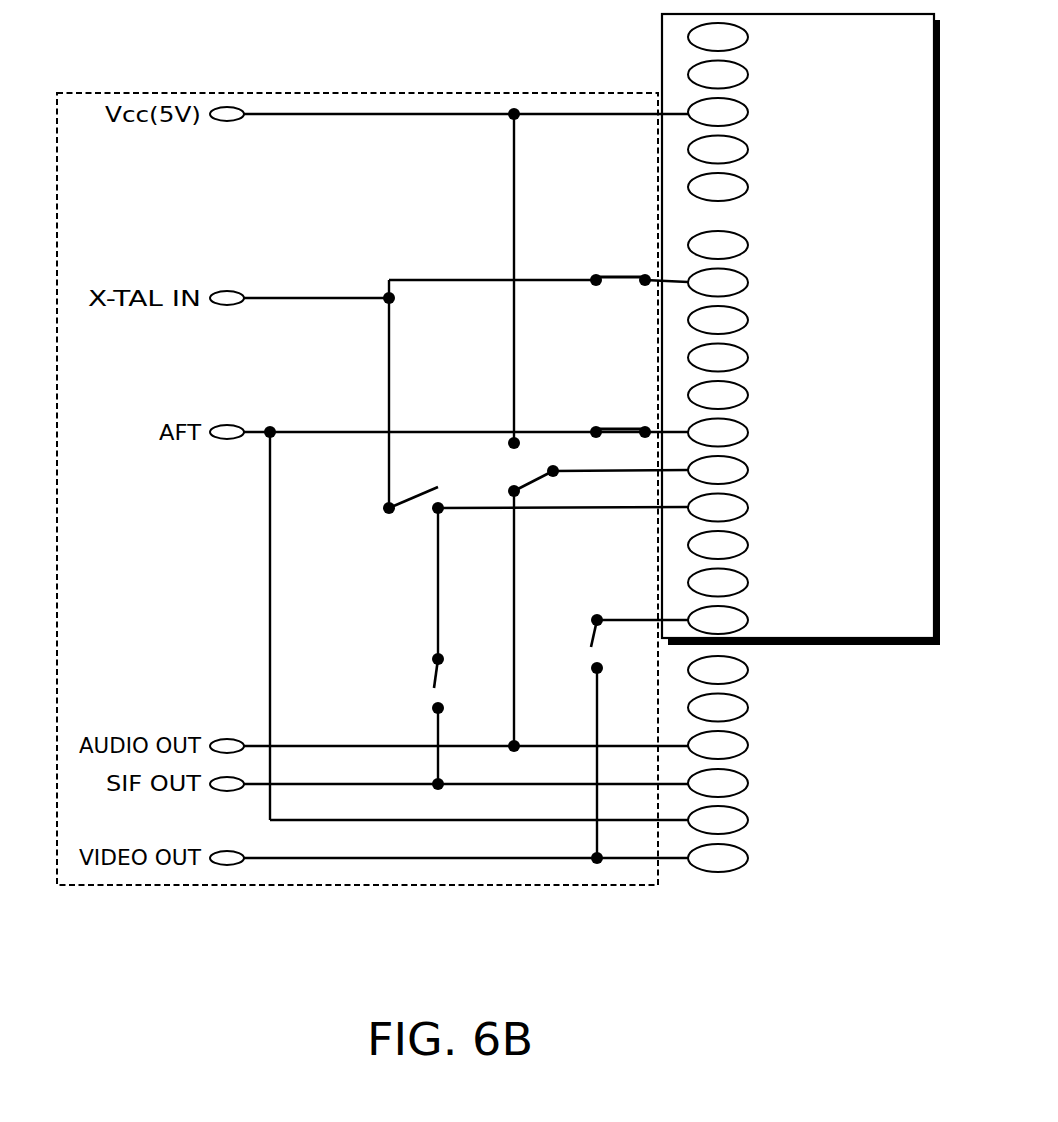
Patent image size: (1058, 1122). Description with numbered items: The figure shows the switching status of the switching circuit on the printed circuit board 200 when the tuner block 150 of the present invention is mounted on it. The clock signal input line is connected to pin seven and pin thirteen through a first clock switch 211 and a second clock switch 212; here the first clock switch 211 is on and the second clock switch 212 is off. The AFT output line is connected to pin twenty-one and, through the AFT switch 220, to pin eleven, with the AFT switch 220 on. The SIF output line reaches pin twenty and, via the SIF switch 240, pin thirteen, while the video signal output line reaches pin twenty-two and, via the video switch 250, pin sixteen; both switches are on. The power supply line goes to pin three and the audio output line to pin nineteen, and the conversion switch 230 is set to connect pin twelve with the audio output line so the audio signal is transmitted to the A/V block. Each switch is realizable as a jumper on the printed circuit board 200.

The tuner block 150 is at (833, 682).
The printed circuit board 200 is at (298, 93).
The first clock switch 211 is at (617, 274).
The second clock switch 212 is at (415, 492).
The AFT switch 220 is at (628, 427).
The conversion switch 230 is at (537, 480).
The SIF switch 240 is at (434, 688).
The video switch 250 is at (591, 647).